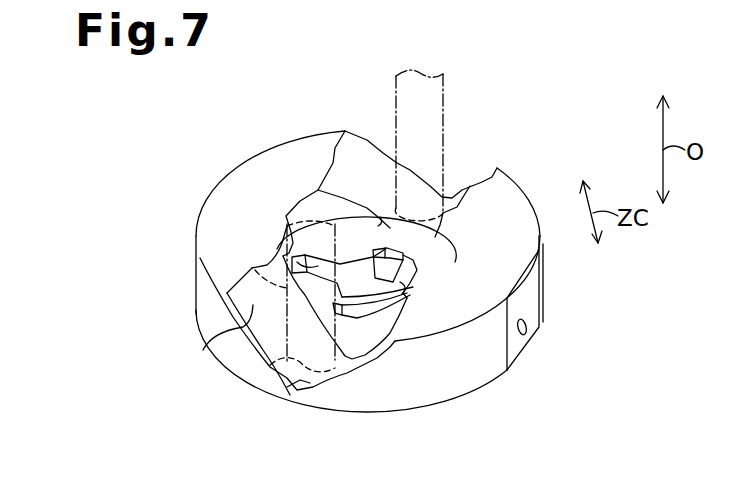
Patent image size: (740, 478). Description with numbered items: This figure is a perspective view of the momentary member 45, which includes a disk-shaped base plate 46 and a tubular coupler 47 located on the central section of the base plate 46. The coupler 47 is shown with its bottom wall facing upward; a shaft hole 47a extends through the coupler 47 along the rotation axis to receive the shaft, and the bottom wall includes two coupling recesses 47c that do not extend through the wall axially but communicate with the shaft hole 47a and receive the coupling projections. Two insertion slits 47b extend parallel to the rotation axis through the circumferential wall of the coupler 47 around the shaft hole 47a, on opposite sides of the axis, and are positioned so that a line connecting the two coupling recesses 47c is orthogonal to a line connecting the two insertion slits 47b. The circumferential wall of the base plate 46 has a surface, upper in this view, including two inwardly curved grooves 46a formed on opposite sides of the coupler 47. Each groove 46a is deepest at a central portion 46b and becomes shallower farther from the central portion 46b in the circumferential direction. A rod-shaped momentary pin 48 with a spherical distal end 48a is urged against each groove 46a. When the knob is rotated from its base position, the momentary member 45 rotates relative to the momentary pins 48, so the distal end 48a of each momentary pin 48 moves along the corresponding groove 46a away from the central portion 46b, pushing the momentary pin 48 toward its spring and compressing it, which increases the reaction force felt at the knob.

The momentary member 45 is at (476, 378).
The base plate 46 is at (540, 300).
The groove 46a is at (470, 186).
The central portion 46b is at (458, 222).
The coupler 47 is at (437, 266).
The shaft hole 47a is at (404, 295).
The insertion slit 47b is at (287, 226).
The coupling recess 47c is at (380, 217).
The momentary pin 48 is at (443, 103).
The distal end 48a is at (410, 200).